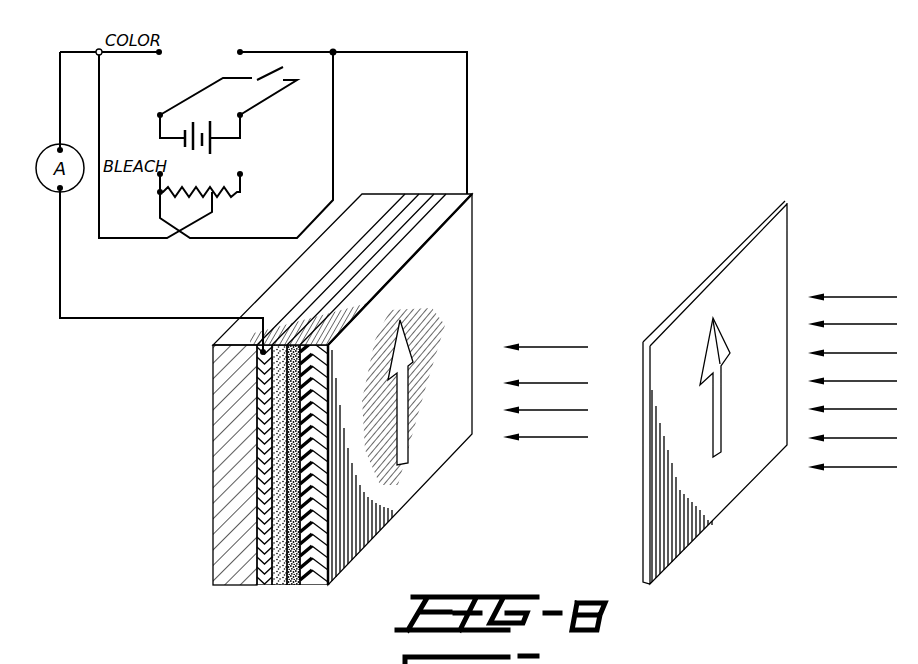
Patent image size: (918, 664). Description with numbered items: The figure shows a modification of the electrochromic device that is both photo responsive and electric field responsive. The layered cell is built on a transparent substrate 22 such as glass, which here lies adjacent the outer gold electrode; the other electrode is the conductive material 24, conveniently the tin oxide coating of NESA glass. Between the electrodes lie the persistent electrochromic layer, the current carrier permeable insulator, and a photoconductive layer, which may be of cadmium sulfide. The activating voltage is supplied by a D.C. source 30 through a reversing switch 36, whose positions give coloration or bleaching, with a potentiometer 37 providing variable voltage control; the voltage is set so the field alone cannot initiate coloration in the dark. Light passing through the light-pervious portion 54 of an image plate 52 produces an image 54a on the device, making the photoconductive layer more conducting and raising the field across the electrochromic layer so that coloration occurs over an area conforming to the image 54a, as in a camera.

The substrate 22 is at (222, 394).
The conductive material 24 is at (329, 587).
The source of D.C. potential 30 is at (212, 142).
The reversing switch 36 is at (188, 88).
The potentiometer 37 is at (220, 196).
The image plate 52 is at (790, 232).
The light-pervious portion 54 is at (718, 337).
The image 54a is at (403, 322).